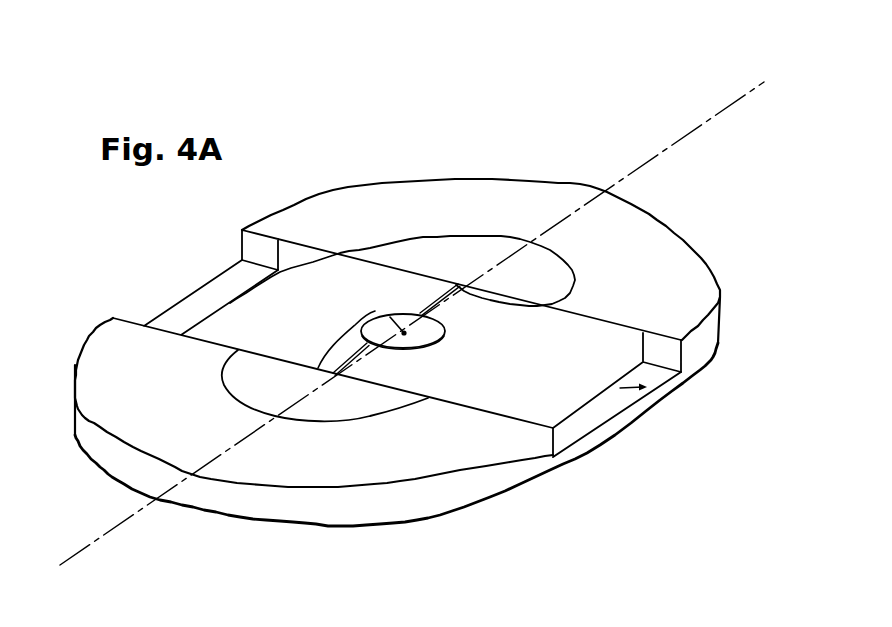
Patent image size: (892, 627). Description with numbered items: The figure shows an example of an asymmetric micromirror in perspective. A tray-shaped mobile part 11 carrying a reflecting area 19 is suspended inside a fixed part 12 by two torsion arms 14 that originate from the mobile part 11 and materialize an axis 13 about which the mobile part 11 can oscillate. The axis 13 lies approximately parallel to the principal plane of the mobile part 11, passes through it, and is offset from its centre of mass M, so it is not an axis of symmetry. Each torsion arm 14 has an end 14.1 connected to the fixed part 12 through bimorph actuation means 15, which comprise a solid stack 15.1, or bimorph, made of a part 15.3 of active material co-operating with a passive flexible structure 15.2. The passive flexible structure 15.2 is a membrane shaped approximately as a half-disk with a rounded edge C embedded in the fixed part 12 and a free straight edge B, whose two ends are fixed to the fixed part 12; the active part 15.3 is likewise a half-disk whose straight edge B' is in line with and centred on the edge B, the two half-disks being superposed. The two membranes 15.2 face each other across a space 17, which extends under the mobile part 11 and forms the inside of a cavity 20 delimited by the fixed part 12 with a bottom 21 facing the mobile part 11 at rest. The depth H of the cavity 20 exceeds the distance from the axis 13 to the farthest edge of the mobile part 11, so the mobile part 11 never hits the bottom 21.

The mobile part 11 is at (436, 356).
The fixed part 12 is at (263, 500).
The axis 13 is at (720, 108).
The torsion arms 14 is at (449, 291).
The end of torsion arm 14.1 is at (575, 276).
The bimorph actuation means 15 is at (633, 115).
The solid stack 15.1 is at (607, 112).
The passive flexible structure 15.2 is at (543, 197).
The part made of active material 15.3 is at (468, 253).
The space 17 is at (527, 395).
The reflecting area 19 is at (318, 369).
The cavity 20 is at (659, 382).
The bottom 21 is at (604, 434).
The straight edge B is at (274, 218).
The straight edge of active material part B' is at (382, 207).
The rounded edge C is at (647, 207).
The depth of the cavity H is at (570, 472).
The centre of mass M is at (373, 310).